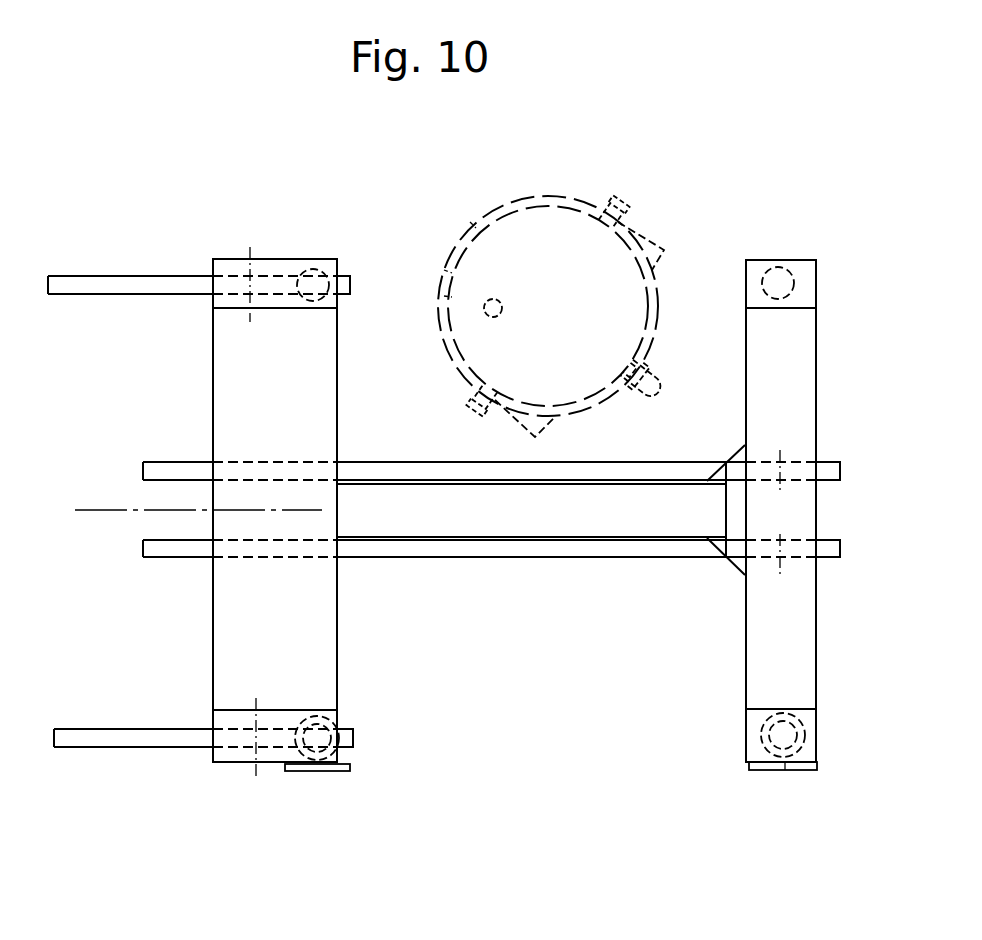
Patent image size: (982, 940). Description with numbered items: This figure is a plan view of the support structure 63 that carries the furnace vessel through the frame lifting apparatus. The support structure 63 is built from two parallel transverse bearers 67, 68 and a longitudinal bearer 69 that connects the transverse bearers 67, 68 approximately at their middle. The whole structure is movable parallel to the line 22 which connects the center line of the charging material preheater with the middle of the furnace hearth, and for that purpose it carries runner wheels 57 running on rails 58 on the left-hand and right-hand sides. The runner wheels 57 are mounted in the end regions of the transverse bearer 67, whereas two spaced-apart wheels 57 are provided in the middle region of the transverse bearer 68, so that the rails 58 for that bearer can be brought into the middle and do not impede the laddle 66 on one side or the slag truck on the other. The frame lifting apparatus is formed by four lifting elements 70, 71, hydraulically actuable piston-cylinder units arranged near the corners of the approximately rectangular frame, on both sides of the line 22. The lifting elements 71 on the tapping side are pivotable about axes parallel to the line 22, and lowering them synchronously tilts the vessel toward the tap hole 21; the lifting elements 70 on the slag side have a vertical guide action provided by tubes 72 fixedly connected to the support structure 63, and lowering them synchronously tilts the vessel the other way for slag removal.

The tap hole 21 is at (483, 310).
The line 22 is at (98, 513).
The runner wheels 57 is at (234, 255).
The rails 58 is at (119, 285).
The support structure 63 is at (378, 566).
The laddle 66 is at (548, 197).
The transverse bearer 67 is at (217, 650).
The transverse bearer 68 is at (808, 680).
The longitudinal bearer 69 is at (521, 540).
The lifting elements 70 is at (318, 770).
The lifting elements 71 is at (313, 270).
The tubes 72 is at (335, 722).